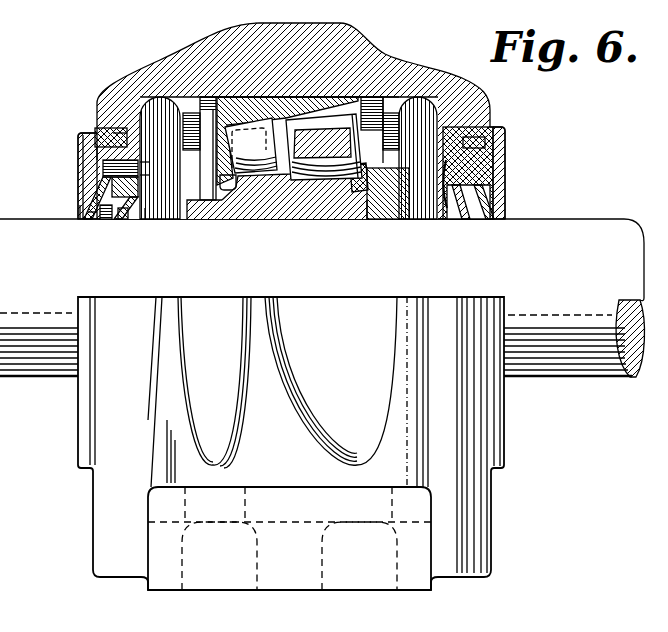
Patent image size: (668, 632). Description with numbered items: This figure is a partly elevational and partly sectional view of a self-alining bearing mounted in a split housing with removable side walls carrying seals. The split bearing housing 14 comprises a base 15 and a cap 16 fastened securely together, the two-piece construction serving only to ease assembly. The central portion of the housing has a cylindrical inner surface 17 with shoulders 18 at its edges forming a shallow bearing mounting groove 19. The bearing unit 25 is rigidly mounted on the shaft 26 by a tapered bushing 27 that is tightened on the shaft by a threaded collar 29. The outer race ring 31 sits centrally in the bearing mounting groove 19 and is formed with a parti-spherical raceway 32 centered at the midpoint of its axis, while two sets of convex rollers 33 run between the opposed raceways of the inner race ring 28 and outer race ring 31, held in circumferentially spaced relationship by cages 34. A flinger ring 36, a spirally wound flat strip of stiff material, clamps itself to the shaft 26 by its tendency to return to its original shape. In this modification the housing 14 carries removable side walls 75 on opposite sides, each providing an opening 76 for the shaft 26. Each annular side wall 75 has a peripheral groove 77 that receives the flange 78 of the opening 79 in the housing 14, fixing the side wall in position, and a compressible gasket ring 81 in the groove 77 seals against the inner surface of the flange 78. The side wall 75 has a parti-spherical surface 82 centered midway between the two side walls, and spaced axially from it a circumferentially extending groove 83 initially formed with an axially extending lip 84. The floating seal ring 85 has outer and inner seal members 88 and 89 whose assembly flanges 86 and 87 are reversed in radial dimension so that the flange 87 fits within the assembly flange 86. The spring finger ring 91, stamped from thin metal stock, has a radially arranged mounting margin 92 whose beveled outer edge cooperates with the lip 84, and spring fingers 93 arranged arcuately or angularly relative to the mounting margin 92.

The split bearing housing 14 is at (492, 500).
The base 15 is at (477, 543).
The cap 16 is at (331, 22).
The cylindrical inner surface 17 is at (374, 96).
The shoulders 18 is at (208, 96).
The bearing mounting groove 19 is at (227, 93).
The bearing unit 25 is at (276, 112).
The shaft 26 is at (582, 371).
The tapered bushing 27 is at (268, 218).
The inner race ring 28 is at (302, 200).
The threaded collar 29 is at (402, 189).
The outer race ring 31 is at (254, 96).
The parti-spherical raceway 32 is at (302, 114).
The convex rollers 33 is at (244, 188).
The cages 34 is at (284, 121).
The flinger ring 36 is at (106, 220).
The removable side walls 75 is at (78, 135).
The openings 76 is at (82, 203).
The peripheral groove 77 is at (79, 144).
The flange 78 is at (97, 128).
The opening 79 is at (123, 122).
The compressible gasket ring 81 is at (95, 126).
The parti-spherical surface 82 is at (100, 171).
The circumferentially extending groove 83 is at (103, 163).
The axially extending lip 84 is at (156, 150).
The floating seal ring 85 is at (78, 210).
The assembly flange 86 is at (143, 189).
The assembly flange 87 is at (140, 203).
The outer seal member 88 is at (92, 221).
The inner seal member 89 is at (123, 222).
The spring finger ring 91 is at (145, 175).
The mounting margin 92 is at (150, 162).
The spring fingers 93 is at (147, 218).